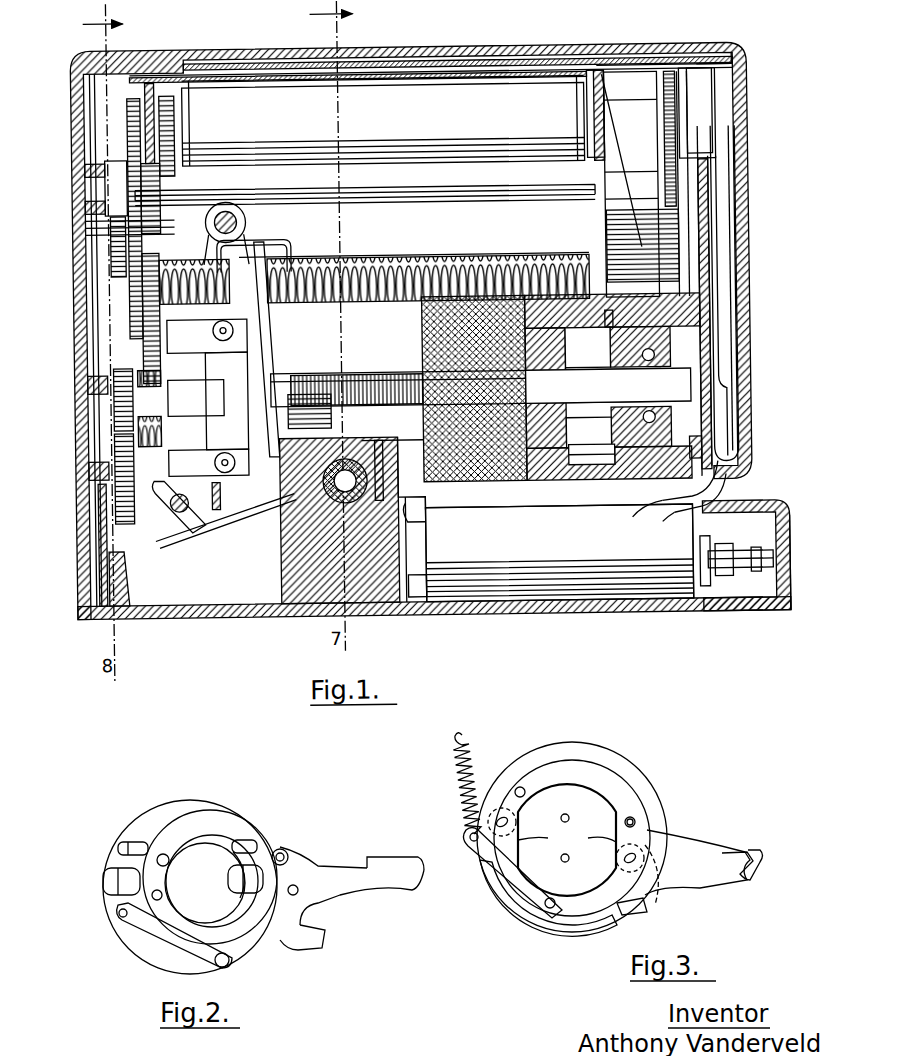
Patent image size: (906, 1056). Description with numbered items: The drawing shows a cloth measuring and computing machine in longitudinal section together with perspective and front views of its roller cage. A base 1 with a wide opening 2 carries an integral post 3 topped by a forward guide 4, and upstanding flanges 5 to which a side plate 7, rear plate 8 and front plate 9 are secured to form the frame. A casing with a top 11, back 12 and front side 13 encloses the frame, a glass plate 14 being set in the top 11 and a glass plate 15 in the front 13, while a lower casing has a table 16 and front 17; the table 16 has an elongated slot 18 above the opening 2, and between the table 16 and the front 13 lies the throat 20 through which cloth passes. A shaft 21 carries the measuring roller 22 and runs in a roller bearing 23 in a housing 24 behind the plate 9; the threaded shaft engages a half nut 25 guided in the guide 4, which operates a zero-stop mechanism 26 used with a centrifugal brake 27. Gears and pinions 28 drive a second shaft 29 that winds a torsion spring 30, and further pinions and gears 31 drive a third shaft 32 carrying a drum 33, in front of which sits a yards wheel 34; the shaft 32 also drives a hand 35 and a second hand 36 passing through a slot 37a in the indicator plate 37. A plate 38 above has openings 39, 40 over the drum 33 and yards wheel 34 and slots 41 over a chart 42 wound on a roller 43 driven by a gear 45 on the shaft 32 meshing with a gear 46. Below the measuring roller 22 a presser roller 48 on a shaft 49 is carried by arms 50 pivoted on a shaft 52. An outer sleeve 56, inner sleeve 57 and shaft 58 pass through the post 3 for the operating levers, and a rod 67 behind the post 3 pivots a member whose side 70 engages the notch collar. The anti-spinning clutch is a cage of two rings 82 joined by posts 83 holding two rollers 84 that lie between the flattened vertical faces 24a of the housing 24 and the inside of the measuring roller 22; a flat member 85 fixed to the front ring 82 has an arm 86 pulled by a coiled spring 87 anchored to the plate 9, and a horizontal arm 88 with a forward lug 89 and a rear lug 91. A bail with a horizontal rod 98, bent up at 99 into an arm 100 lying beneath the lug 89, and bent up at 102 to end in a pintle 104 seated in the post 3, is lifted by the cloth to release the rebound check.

In FIG. 1, the base 1 is at (197, 610).
In FIG. 1, the elongated opening 2 is at (666, 604).
In FIG. 1, the post 3 is at (308, 513).
In FIG. 1, the guide 4 is at (410, 478).
In FIG. 1, the ribs or flanges 5 is at (120, 570).
In FIG. 1, the side plate 7 is at (340, 326).
In FIG. 1, the rear plate 8 is at (96, 508).
In FIG. 1, the front plate 9 is at (715, 305).
In FIG. 1, the top 11 is at (132, 48).
In FIG. 1, the back 12 is at (93, 396).
In FIG. 1, the front side 13 is at (738, 93).
In FIG. 1, the glass plate 14 is at (424, 58).
In FIG. 1, the glass plate 15 is at (740, 363).
In FIG. 1, the table 16 is at (734, 512).
In FIG. 1, the front 17 is at (782, 546).
In FIG. 1, the elongated slot 18 is at (728, 491).
In FIG. 1, the throat 20 is at (740, 476).
In FIG. 1, the shaft 21 is at (348, 396).
In FIG. 1, the measuring roller 22 is at (420, 323).
In FIG. 3, the measuring roller 22 is at (566, 744).
In FIG. 1, the roller bearing 23 is at (630, 424).
In FIG. 1, the roller bearing housing 24 is at (693, 430).
In FIG. 3, the roller bearing housing 24 is at (593, 802).
In FIG. 3, the vertical faces 24a is at (567, 840).
In FIG. 1, the half nut 25 is at (304, 393).
In FIG. 1, the mechanism 26 is at (287, 353).
In FIG. 1, the centrifugal brake apparatus 27 is at (247, 472).
In FIG. 1, the gears and pinions 28 is at (122, 328).
In FIG. 1, the second shaft 29 is at (386, 254).
In FIG. 1, the torsion spring 30 is at (432, 256).
In FIG. 1, the pinions and gears 31 is at (150, 248).
In FIG. 1, the third shaft 32 is at (364, 178).
In FIG. 1, the drum 33 is at (612, 201).
In FIG. 1, the yards wheel 34 is at (740, 78).
In FIG. 1, the hand 35 is at (724, 180).
In FIG. 1, the second hand 36 is at (710, 290).
In FIG. 1, the indicator plate 37 is at (720, 103).
In FIG. 1, the slot 37a is at (722, 358).
In FIG. 1, the plate 38 is at (597, 73).
In FIG. 1, the opening 39 is at (647, 64).
In FIG. 1, the opening 40 is at (704, 64).
In FIG. 1, the elongated slots 41 is at (464, 64).
In FIG. 1, the chart 42 is at (389, 86).
In FIG. 1, the roller 43 is at (472, 135).
In FIG. 1, the gear 45 is at (178, 179).
In FIG. 1, the gear 46 is at (178, 121).
In FIG. 1, the presser roller 48 is at (544, 568).
In FIG. 1, the shaft 49 is at (716, 550).
In FIG. 1, the arms 50 is at (404, 600).
In FIG. 1, the shaft 52 is at (751, 575).
In FIG. 1, the outer sleeve 56 is at (320, 498).
In FIG. 1, the inner sleeve 57 is at (203, 511).
In FIG. 1, the shaft 58 is at (275, 503).
In FIG. 1, the rod 67 is at (172, 476).
In FIG. 1, the side 70 is at (175, 545).
In FIG. 1, the rings 82 is at (684, 316).
In FIG. 2, the rings 82 is at (204, 824).
In FIG. 3, the rings 82 is at (586, 776).
In FIG. 1, the posts 83 is at (643, 462).
In FIG. 2, the posts 83 is at (135, 843).
In FIG. 2, the rollers 84 is at (110, 896).
In FIG. 3, the rollers 84 is at (520, 824).
In FIG. 1, the irregular shaped member 85 is at (648, 506).
In FIG. 2, the irregular shaped member 85 is at (282, 942).
In FIG. 3, the irregular shaped member 85 is at (580, 905).
In FIG. 2, the projecting arm 86 is at (160, 935).
In FIG. 3, the projecting arm 86 is at (492, 858).
In FIG. 3, the coiled spring 87 is at (456, 766).
In FIG. 2, the horizontal arm 88 is at (323, 866).
In FIG. 3, the horizontal arm 88 is at (688, 868).
In FIG. 2, the lug 89 is at (326, 940).
In FIG. 3, the lug 89 is at (638, 914).
In FIG. 2, the lug 91 is at (382, 856).
In FIG. 3, the lug 91 is at (748, 850).
In FIG. 1, the horizontal rod 98 is at (425, 536).
In FIG. 1, the upturned angled portion 99 is at (680, 502).
In FIG. 1, the arm 100 is at (710, 445).
In FIG. 1, the upturned portion 102 is at (428, 516).
In FIG. 1, the pintle 104 is at (376, 445).